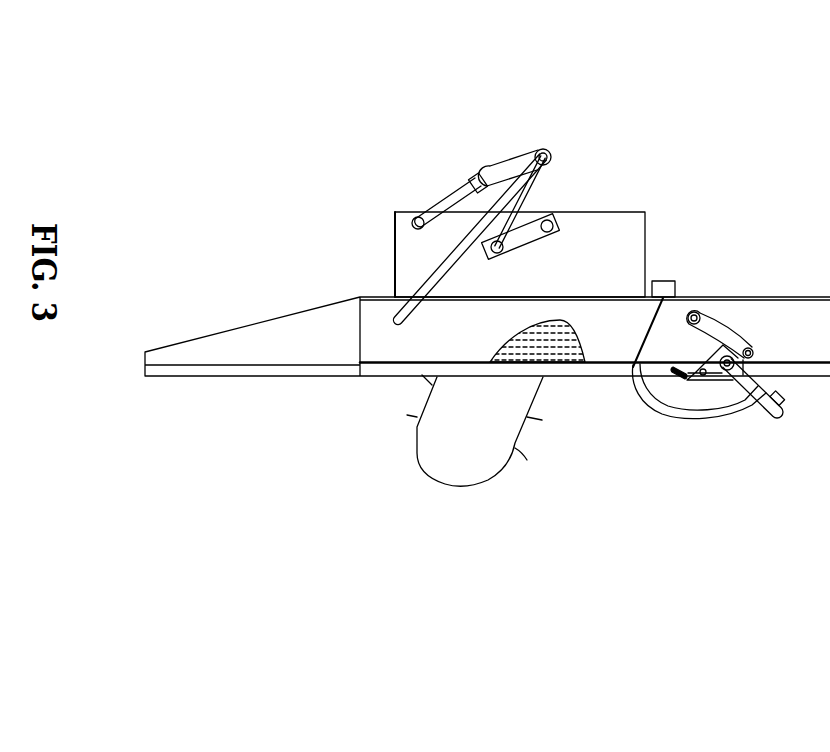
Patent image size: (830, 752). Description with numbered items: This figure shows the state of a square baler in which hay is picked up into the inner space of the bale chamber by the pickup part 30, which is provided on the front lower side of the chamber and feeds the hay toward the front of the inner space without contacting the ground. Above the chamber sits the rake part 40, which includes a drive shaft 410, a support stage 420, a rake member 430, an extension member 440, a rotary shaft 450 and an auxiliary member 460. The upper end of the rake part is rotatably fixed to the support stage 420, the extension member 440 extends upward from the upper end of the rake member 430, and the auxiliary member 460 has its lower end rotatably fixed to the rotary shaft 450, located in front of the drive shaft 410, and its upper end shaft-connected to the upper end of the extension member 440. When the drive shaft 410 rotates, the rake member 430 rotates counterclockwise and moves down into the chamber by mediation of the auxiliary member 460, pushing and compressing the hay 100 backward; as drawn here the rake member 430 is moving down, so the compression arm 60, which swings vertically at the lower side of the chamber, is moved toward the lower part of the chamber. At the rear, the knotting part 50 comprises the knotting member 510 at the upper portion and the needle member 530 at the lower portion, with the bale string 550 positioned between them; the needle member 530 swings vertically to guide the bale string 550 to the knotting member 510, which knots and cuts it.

The pickup part 30 is at (448, 465).
The rake part 40 is at (550, 135).
The knotting part 50 is at (790, 248).
The compression arm 60 is at (680, 375).
The hay 100 is at (547, 357).
The drive shaft 410 is at (540, 219).
The support stage 420 is at (540, 222).
The rake member 430 is at (420, 284).
The extension member 440 is at (490, 236).
The rotary shaft 450 is at (413, 220).
The auxiliary member 460 is at (517, 156).
The knotting member 510 is at (690, 312).
The needle member 530 is at (748, 364).
The bale string 550 is at (648, 337).